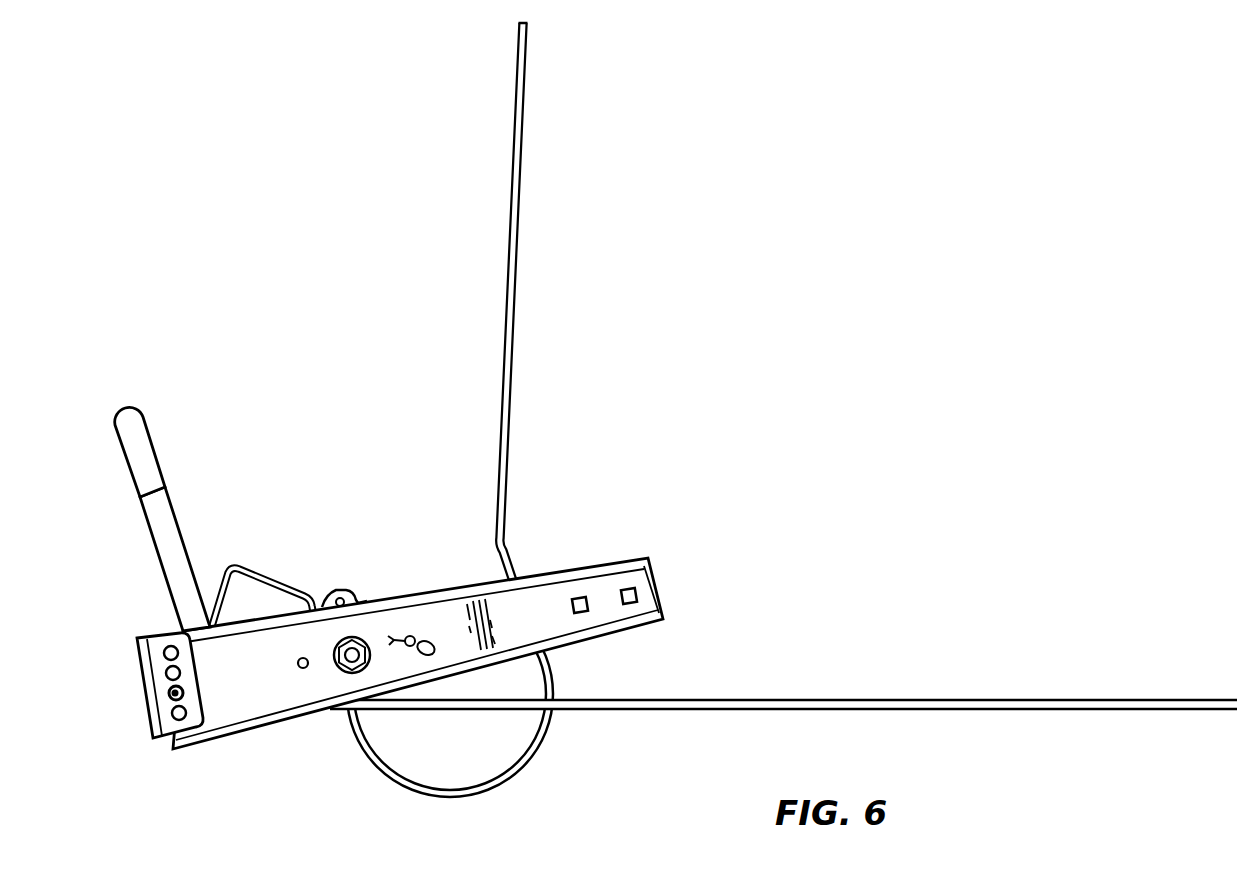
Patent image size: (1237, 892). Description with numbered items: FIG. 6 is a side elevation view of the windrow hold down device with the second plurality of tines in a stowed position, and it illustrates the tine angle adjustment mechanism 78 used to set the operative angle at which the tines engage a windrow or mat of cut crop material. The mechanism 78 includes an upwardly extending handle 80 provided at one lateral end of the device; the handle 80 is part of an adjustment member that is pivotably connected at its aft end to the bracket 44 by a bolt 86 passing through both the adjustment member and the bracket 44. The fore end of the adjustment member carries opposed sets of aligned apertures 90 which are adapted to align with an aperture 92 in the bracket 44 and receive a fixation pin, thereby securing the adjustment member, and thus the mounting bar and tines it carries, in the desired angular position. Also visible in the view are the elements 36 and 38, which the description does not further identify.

The rail 36 is at (1028, 698).
The upright rod 38 is at (520, 363).
The bracket 44 is at (433, 617).
The tine angle adjustment mechanism 78 is at (122, 611).
The handle 80 is at (127, 462).
The bolt 86 is at (340, 673).
The apertures 90 is at (162, 657).
The aperture 92 is at (168, 695).